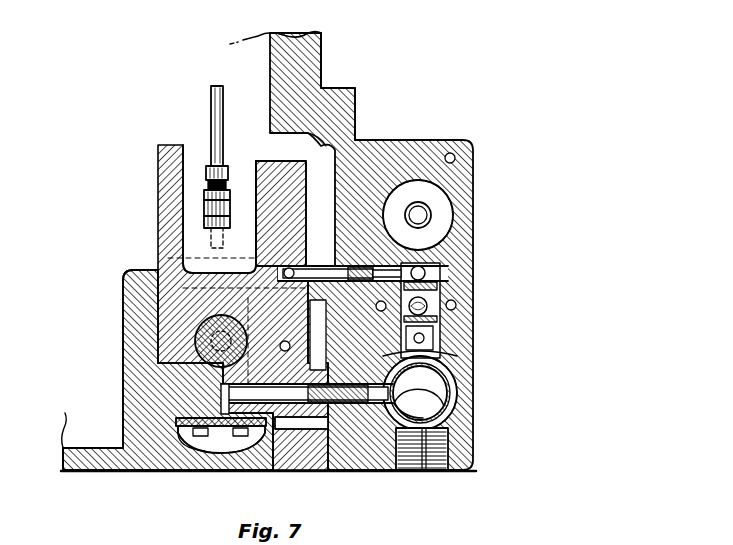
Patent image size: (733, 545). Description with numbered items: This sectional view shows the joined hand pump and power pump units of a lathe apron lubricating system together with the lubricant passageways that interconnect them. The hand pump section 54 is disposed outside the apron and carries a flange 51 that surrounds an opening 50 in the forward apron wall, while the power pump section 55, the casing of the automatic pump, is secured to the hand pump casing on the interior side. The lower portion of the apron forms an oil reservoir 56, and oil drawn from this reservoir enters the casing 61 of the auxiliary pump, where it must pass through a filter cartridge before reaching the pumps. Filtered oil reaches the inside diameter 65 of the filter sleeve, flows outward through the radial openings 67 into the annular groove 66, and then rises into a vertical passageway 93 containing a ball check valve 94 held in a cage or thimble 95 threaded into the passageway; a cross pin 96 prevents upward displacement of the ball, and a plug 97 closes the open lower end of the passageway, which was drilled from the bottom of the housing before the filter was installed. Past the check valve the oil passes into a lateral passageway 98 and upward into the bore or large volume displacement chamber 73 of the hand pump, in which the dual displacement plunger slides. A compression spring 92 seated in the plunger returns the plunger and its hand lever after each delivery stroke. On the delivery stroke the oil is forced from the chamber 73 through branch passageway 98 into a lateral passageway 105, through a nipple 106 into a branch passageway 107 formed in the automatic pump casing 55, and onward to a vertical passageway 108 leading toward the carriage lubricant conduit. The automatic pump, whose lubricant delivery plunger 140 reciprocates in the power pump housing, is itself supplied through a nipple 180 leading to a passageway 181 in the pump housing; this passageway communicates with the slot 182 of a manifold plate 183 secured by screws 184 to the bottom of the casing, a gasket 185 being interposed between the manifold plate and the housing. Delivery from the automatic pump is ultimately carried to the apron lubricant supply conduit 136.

The opening 50 is at (378, 110).
The flange 51 is at (345, 86).
The hand pump section 54 is at (468, 292).
The power pump section 55 is at (165, 308).
The oil reservoir 56 is at (210, 428).
The casing of the auxiliary pump 61 is at (455, 436).
The inside diameter of sleeve 65 is at (445, 378).
The annular groove 66 is at (440, 350).
The radial openings 67 is at (425, 399).
The bore 73 is at (430, 190).
The compression spring 92 is at (425, 207).
The vertical passageway 93 is at (466, 318).
The ball check valve 94 is at (466, 288).
The cage or thimble 95 is at (466, 305).
The cross pin 96 is at (466, 275).
The plug 97 is at (432, 462).
The lateral passageway 98 is at (465, 260).
The lateral passageway 105 is at (362, 258).
The nipple 106 is at (338, 258).
The branch passageway 107 is at (250, 262).
The vertical passageway 108 is at (160, 265).
The apron lubricant supply conduit 136 is at (203, 118).
The automatic lubricant delivery plunger 140 is at (200, 335).
The nipple 180 is at (345, 398).
The passageway 181 is at (268, 400).
The slot 182 is at (190, 428).
The manifold plate 183 is at (165, 436).
The screws 184 is at (195, 430).
The gasket 185 is at (232, 426).